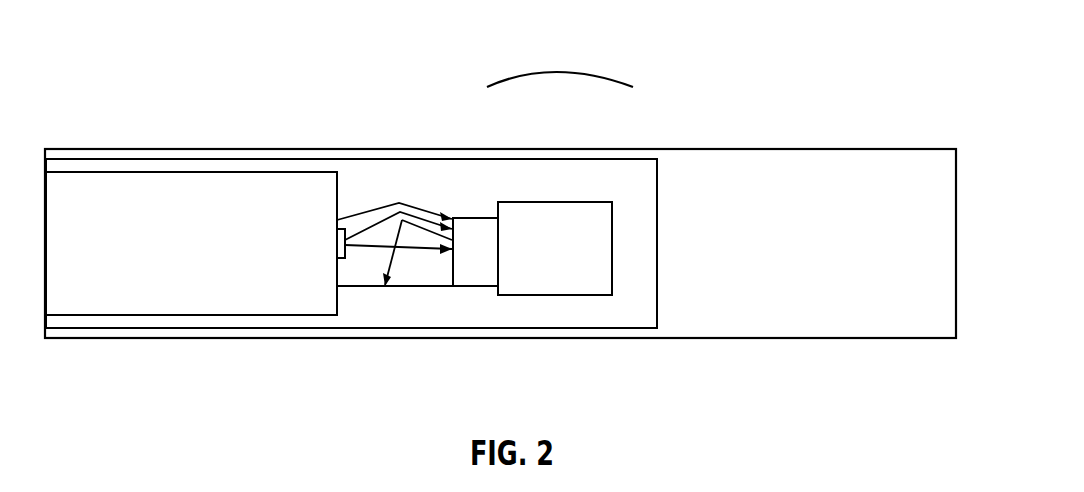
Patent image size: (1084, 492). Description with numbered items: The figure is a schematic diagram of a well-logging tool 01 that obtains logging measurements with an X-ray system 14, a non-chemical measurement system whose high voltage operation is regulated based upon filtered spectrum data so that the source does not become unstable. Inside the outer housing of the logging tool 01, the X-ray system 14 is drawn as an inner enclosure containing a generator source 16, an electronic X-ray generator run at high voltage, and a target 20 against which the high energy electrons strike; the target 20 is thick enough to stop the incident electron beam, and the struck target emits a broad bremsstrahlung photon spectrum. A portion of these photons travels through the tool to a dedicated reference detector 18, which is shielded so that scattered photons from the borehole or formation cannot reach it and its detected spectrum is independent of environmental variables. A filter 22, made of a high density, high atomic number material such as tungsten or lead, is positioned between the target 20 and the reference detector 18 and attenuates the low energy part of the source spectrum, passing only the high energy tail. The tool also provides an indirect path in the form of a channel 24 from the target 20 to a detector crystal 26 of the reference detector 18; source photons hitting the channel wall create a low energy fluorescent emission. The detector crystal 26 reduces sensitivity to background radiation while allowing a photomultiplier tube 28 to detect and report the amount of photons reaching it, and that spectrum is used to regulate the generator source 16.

The well-logging tool 01 is at (909, 149).
The X-ray system 14 is at (658, 244).
The source 16 is at (102, 195).
The reference detector 18 is at (558, 70).
The target 20 is at (337, 245).
The filter 22 is at (402, 268).
The channel 24 is at (422, 212).
The detector crystal 26 is at (465, 232).
The photomultiplier tube 28 is at (553, 248).